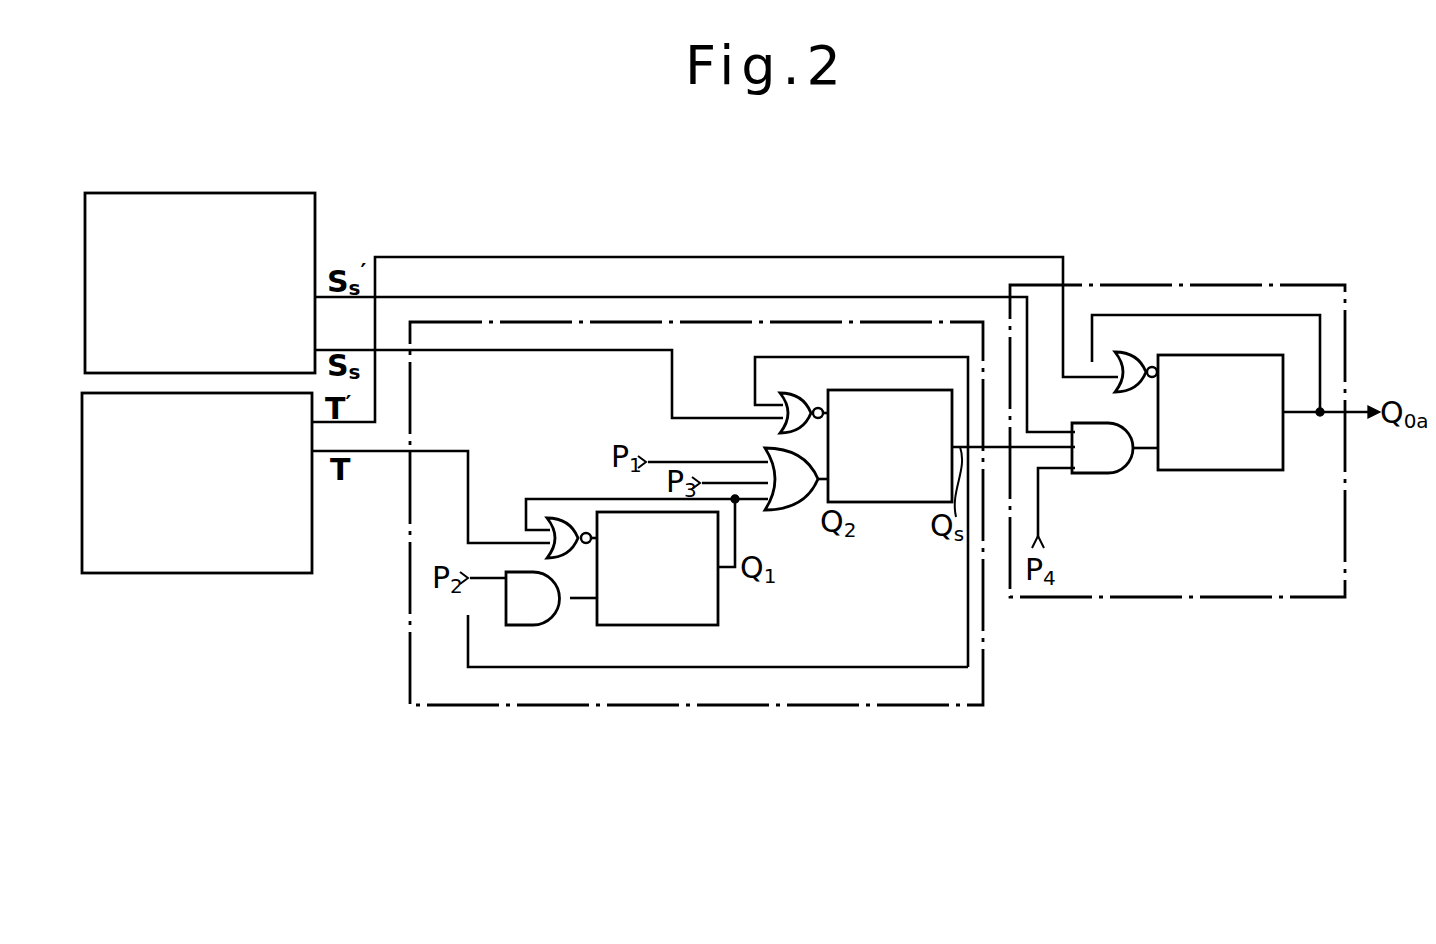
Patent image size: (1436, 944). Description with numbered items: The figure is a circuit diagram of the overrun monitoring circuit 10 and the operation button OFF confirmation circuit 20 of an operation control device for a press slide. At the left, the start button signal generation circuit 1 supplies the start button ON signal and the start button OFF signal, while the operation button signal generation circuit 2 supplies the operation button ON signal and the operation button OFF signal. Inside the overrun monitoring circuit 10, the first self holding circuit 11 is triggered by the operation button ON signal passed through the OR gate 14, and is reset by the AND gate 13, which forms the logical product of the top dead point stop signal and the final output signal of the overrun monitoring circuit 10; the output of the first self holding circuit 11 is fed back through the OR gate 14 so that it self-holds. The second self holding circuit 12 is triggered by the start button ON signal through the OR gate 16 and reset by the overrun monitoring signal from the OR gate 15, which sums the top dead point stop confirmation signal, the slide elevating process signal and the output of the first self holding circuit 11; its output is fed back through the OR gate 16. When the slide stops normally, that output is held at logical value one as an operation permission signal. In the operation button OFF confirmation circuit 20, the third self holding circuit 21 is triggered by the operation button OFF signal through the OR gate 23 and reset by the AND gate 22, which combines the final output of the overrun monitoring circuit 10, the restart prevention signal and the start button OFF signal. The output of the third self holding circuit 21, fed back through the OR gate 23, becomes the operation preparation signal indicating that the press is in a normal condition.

The start button signal generation circuit 1 is at (250, 192).
The operation button signal generation circuit 2 is at (263, 574).
The overrun monitoring circuit 10 is at (595, 707).
The first self holding circuit 11 is at (718, 614).
The second self holding circuit 12 is at (888, 503).
The AND gate 13 is at (548, 625).
The OR gate 14 is at (562, 518).
The OR gate 15 is at (788, 507).
The OR gate 16 is at (806, 378).
The operation button OFF confirmation circuit 20 is at (1257, 283).
The third self holding circuit 21 is at (1265, 472).
The AND gate 22 is at (1112, 475).
The OR gate 23 is at (1130, 352).